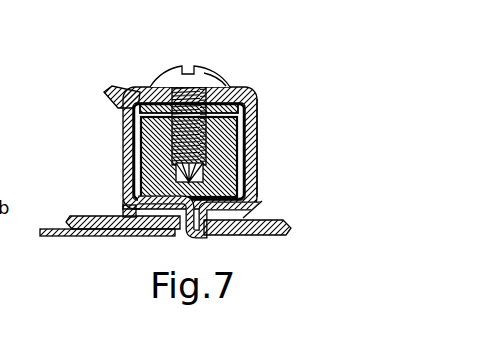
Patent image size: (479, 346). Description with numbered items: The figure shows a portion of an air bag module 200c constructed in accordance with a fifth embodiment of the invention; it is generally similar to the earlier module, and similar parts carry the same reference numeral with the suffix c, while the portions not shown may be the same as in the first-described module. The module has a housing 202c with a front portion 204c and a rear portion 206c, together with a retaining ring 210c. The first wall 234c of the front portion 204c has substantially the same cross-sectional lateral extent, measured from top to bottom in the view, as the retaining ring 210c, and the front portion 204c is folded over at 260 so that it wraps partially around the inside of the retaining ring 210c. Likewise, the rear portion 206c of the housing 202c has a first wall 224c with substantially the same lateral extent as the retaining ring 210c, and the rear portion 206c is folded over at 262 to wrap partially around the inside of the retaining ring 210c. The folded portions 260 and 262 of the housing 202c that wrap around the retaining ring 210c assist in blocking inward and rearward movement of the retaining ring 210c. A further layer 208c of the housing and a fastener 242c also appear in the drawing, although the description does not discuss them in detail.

The air bag module 200c is at (212, 151).
The housing 202c is at (88, 106).
The front portion of the housing 204c is at (292, 231).
The rear portion of the housing 206c is at (97, 217).
The left base plate lower layer 208c is at (108, 238).
The retaining ring 210c is at (242, 152).
The first wall of the rear portion 224c is at (124, 148).
The first wall of the front portion 234c is at (258, 117).
The screw 242c is at (203, 65).
The folded-over portion of the front housing portion 260 is at (258, 203).
The folded-over portion of the rear housing portion 262 is at (130, 207).